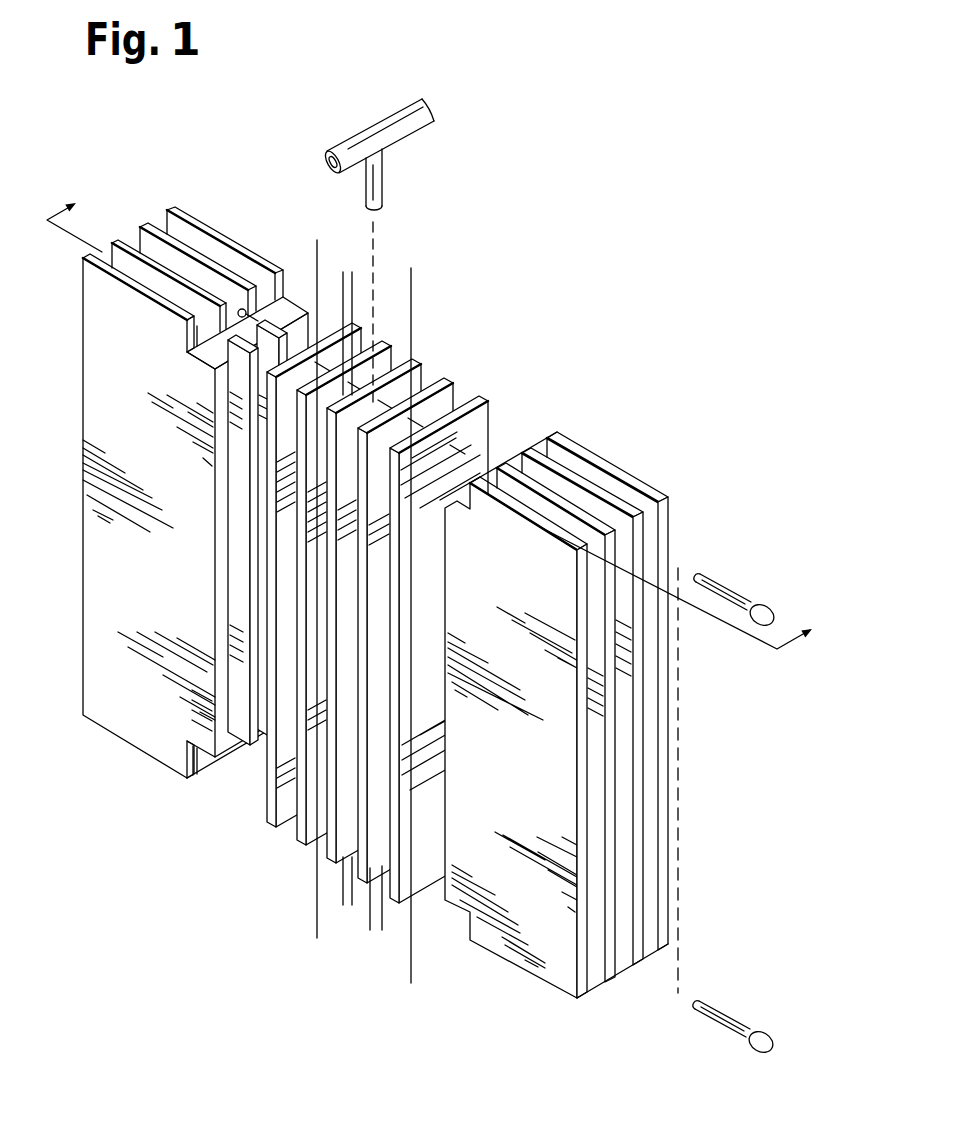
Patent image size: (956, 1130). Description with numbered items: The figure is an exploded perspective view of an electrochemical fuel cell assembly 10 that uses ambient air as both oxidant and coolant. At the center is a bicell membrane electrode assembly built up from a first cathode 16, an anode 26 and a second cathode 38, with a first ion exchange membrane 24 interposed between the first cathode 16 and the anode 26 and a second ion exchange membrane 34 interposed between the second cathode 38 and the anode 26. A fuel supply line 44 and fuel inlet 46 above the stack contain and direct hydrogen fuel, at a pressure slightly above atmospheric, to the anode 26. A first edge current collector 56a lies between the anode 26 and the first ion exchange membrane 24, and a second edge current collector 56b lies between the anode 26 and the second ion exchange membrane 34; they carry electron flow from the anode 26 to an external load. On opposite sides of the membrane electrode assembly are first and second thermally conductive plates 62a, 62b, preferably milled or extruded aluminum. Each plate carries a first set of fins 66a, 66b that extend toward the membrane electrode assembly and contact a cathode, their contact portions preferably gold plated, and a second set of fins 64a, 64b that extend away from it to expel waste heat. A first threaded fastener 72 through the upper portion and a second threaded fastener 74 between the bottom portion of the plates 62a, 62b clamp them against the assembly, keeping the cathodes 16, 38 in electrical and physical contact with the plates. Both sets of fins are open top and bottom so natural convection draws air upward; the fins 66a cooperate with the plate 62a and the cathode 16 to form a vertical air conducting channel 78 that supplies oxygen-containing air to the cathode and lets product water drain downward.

The electrochemical fuel cell assembly 10 is at (100, 752).
The first cathode 16 is at (270, 816).
The first ion exchange membrane 24 is at (300, 835).
The anode 26 is at (330, 852).
The second ion exchange membrane 34 is at (362, 882).
The second cathode 38 is at (408, 898).
The fuel supply line 44 is at (468, 88).
The fuel inlet 46 is at (383, 186).
The first edge current collector 56a is at (317, 257).
The second edge current collector 56b is at (410, 273).
The first thermally conductive plate 62a is at (280, 270).
The second thermally conductive plate 62b is at (537, 442).
The fins 64a is at (160, 752).
The fins 64b is at (568, 984).
The fins 66a is at (135, 597).
The fins 66b is at (451, 903).
The first threaded fastener 72 is at (712, 578).
The second threaded fastener 74 is at (698, 1010).
The air conducting channel 78 is at (205, 360).